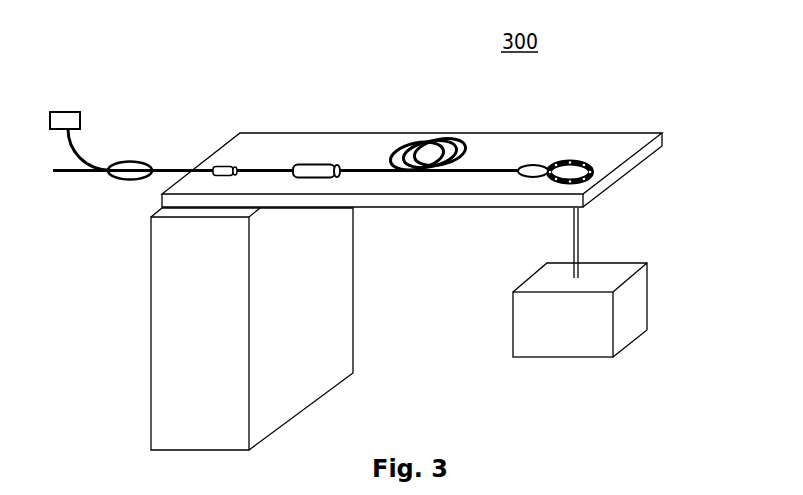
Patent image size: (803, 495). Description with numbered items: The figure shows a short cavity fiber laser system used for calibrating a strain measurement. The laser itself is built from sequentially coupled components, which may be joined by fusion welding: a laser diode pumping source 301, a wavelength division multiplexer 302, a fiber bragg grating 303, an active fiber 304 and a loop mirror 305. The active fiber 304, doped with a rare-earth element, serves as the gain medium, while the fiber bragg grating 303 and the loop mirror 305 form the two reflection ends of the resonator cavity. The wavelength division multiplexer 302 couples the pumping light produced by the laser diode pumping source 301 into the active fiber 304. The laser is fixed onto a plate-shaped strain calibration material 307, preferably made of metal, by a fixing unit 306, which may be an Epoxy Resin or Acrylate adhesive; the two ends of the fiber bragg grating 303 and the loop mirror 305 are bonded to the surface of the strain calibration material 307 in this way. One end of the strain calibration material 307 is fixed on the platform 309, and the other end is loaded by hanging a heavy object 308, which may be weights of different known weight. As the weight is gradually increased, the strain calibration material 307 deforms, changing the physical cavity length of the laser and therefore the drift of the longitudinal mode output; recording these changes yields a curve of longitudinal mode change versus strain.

The laser diode pumping source 301 is at (62, 120).
The wavelength division multiplexer 302 is at (117, 180).
The fiber bragg grating 303 is at (317, 168).
The active fiber 304 is at (535, 162).
The loop mirror 305 is at (432, 138).
The fixing unit 306 is at (217, 173).
The strain calibration material 307 is at (598, 148).
The heavy object 308 is at (625, 299).
The platform 309 is at (318, 352).